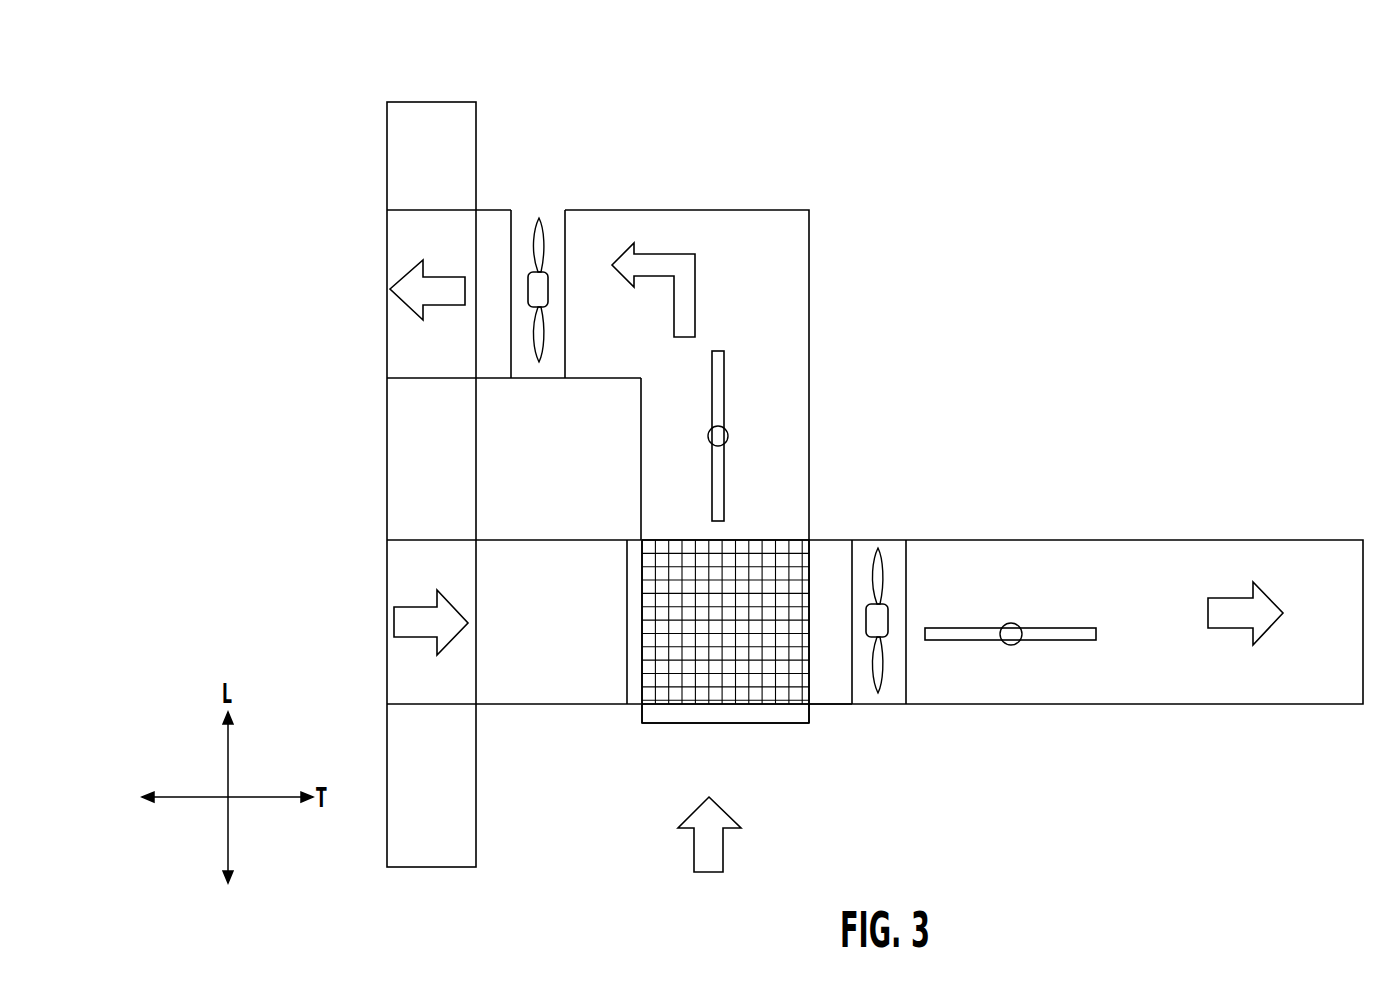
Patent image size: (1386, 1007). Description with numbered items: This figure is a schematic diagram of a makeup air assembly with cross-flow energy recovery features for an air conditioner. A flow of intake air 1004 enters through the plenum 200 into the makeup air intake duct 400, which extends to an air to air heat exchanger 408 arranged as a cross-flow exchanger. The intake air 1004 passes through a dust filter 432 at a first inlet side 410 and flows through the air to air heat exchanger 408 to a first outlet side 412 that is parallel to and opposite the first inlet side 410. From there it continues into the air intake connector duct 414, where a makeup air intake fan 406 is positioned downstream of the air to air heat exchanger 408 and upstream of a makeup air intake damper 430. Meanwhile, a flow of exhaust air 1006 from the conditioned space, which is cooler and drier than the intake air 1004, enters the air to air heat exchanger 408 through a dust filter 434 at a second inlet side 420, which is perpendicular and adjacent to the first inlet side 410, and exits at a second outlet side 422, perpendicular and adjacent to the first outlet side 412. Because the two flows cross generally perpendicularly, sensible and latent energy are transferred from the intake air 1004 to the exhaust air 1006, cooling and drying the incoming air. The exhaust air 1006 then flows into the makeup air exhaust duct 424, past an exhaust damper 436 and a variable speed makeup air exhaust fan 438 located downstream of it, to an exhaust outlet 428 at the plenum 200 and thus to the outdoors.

The plenum 200 is at (431, 120).
The makeup air intake duct 400 is at (515, 557).
The makeup air intake fan 406 is at (898, 545).
The air to air heat exchanger 408 is at (800, 660).
The first inlet side 410 is at (635, 644).
The first outlet side 412 is at (812, 558).
The air intake connector duct 414 is at (1124, 545).
The second inlet side 420 is at (688, 705).
The second outlet side 422 is at (758, 538).
The makeup air exhaust duct 424 is at (812, 229).
The exhaust outlet 428 is at (476, 232).
The makeup air intake damper 430 is at (1076, 633).
The dust filter 432 is at (633, 703).
The dust filter 434 is at (752, 715).
The exhaust damper 436 is at (717, 398).
The makeup air exhaust fan 438 is at (553, 210).
The intake air 1004 is at (410, 625).
The exhaust air 1006 is at (412, 285).